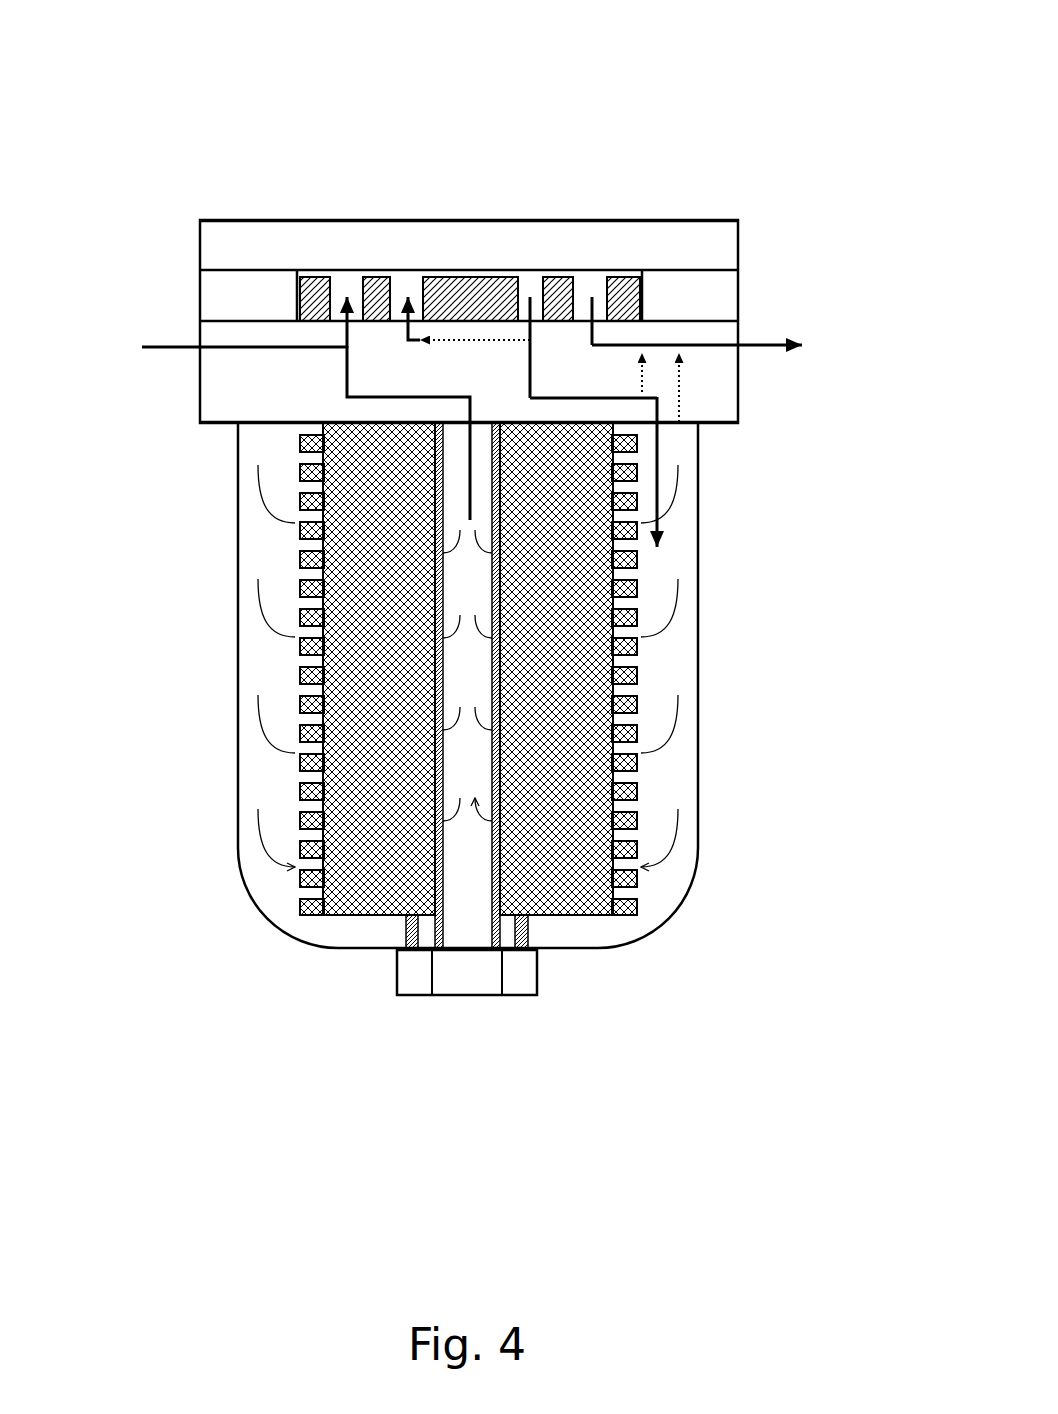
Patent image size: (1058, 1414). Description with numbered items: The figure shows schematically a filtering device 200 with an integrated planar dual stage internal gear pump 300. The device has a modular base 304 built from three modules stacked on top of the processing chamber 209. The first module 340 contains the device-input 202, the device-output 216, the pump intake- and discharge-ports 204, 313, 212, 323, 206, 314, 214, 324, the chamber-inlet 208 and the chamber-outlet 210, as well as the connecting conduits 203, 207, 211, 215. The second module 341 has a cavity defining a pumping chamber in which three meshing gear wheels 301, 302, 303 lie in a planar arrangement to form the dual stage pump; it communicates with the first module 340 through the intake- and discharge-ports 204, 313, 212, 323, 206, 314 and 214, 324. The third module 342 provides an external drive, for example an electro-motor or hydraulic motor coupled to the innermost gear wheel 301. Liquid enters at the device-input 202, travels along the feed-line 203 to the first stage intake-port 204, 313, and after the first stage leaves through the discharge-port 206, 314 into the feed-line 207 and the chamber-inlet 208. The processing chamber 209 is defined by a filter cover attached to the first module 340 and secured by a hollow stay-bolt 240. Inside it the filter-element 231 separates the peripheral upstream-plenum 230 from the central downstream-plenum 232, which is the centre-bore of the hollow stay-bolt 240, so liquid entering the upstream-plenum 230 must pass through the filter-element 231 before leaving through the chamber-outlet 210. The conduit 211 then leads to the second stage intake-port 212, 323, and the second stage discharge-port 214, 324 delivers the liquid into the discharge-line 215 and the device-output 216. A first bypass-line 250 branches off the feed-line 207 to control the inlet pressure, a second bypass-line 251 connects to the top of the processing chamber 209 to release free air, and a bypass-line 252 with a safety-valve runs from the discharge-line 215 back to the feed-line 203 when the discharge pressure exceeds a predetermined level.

The filtering device 200 is at (86, 140).
The device-input 202 is at (198, 345).
The feed-line 203 is at (228, 347).
The first stage intake-port 204 is at (384, 244).
The first stage discharge-port 206 is at (497, 273).
The feed-line 207 is at (592, 398).
The chamber-inlet 208 is at (657, 440).
The processing chamber 209 is at (698, 705).
The chamber-outlet 210 is at (472, 425).
The connecting conduit 211 is at (421, 397).
The second stage intake-port 212 is at (290, 248).
The second stage discharge-port 214 is at (612, 247).
The discharge-line 215 is at (708, 350).
The device-output 216 is at (740, 353).
The upstream-plenum 230 is at (660, 755).
The filter-element 231 is at (565, 818).
The downstream-plenum 232 is at (467, 845).
The hollow stay-bolt 240 is at (468, 972).
The first bypass-line 250 is at (643, 375).
The second bypass-line 251 is at (682, 397).
The bypass-line 252 is at (485, 342).
The dual stage internal gear pump 300 is at (357, 292).
The innermost gear wheel 301 is at (460, 300).
The gear wheel 302 is at (560, 300).
The gear wheel 303 is at (620, 300).
The modular base 304 is at (242, 290).
The first stage intake-port 313 is at (393, 298).
The first stage discharge-port 314 is at (517, 310).
The second stage intake-port 323 is at (320, 298).
The second stage discharge-port 324 is at (582, 310).
The first module 340 is at (718, 335).
The second module 341 is at (718, 298).
The third module 342 is at (718, 250).